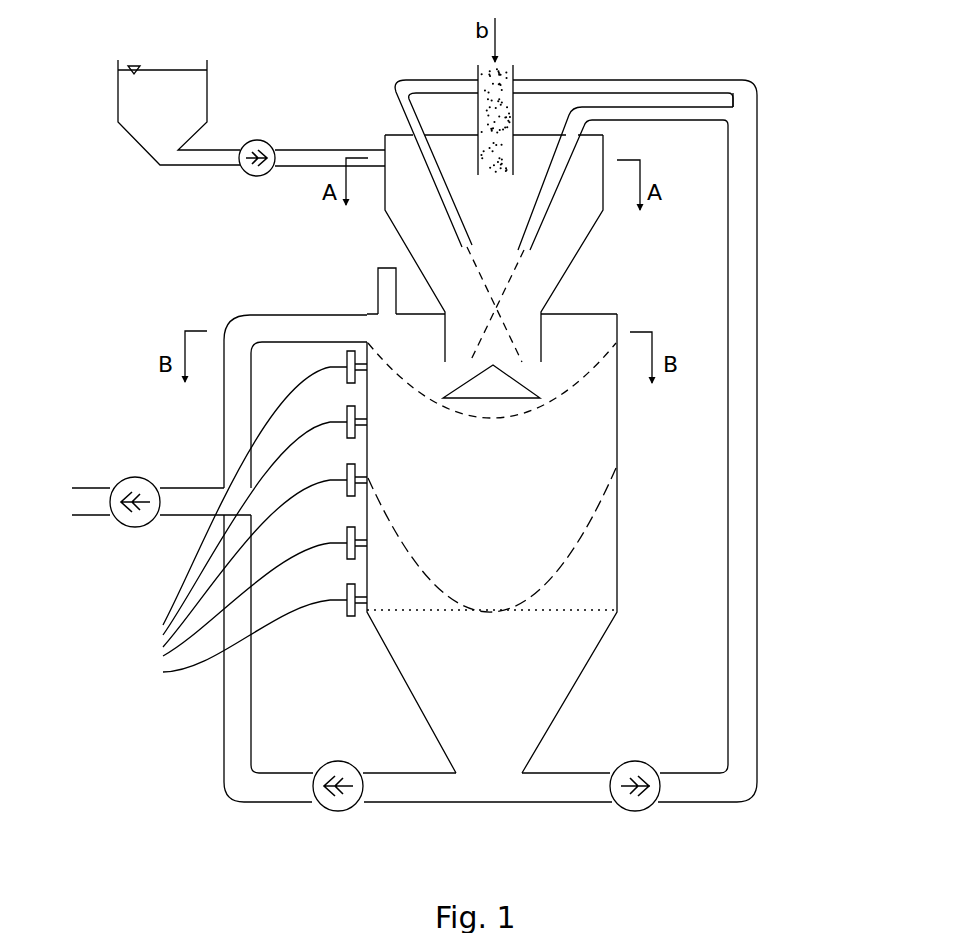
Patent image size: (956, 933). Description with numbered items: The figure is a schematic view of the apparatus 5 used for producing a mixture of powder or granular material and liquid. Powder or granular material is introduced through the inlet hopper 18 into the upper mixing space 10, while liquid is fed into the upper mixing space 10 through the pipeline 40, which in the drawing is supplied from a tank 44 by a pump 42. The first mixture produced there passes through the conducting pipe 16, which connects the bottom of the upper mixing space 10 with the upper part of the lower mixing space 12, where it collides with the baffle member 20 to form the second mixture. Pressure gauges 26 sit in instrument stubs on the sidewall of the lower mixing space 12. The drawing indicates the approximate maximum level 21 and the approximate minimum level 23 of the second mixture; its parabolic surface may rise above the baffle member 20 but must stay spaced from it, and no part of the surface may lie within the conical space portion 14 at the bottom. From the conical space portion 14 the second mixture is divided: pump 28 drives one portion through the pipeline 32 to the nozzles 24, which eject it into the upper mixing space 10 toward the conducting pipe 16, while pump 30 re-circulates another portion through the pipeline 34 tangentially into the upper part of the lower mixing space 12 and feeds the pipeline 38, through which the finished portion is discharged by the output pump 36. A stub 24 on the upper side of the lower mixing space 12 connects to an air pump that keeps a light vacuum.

The apparatus 5 is at (777, 80).
The upper mixing space 10 is at (592, 240).
The lower mixing space 12 is at (617, 390).
The conical space portion 14 is at (567, 762).
The conducting pipe 16 is at (542, 325).
The inlet hopper 18 is at (513, 70).
The baffle member 20 is at (515, 382).
The approximate maximum level 21 is at (540, 398).
The approximate minimum level 23 is at (585, 548).
The nozzles 24 is at (405, 125).
The pressure gauges 26 is at (244, 511).
The pump 28 is at (650, 810).
The pump 30 is at (352, 807).
The pipeline 32 is at (757, 405).
The pipeline 34 is at (225, 410).
The output pump 36 is at (143, 525).
The pipeline 38 is at (84, 515).
The pipeline 40 is at (303, 168).
The pump 42 is at (243, 173).
The tank 44 is at (207, 100).